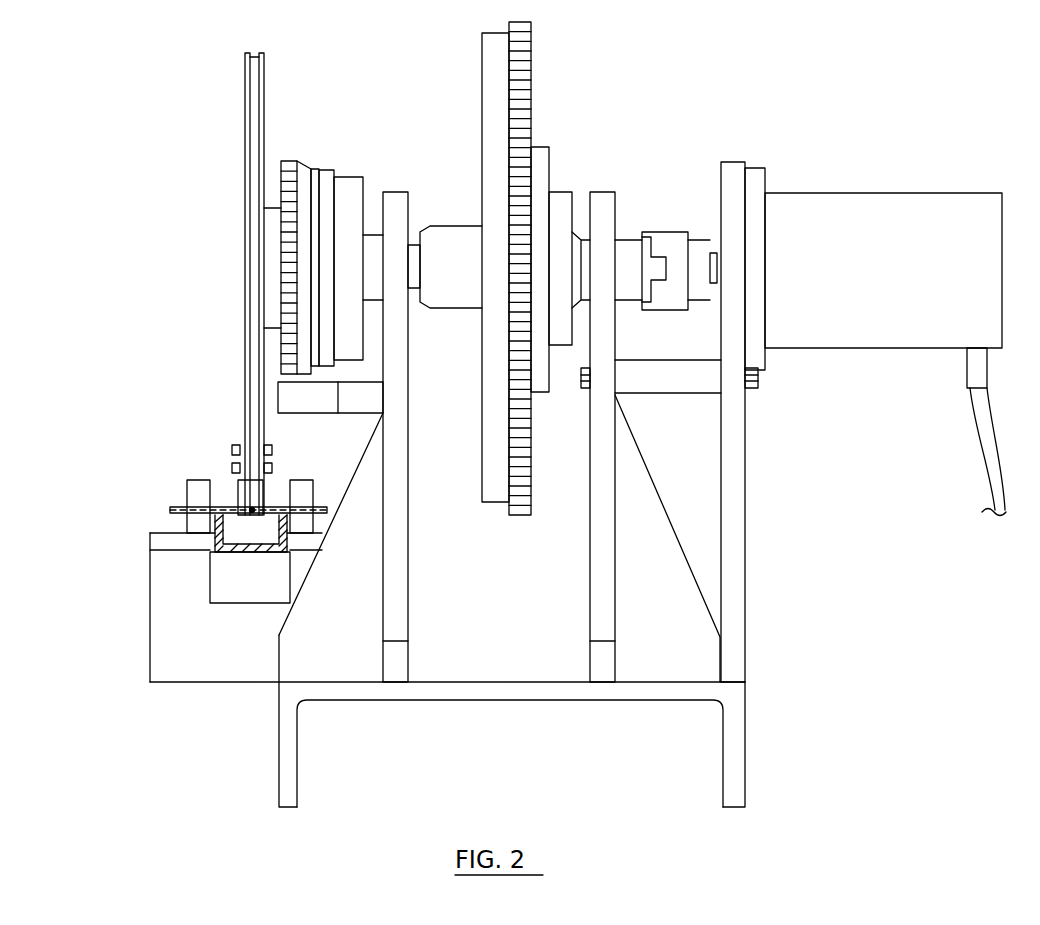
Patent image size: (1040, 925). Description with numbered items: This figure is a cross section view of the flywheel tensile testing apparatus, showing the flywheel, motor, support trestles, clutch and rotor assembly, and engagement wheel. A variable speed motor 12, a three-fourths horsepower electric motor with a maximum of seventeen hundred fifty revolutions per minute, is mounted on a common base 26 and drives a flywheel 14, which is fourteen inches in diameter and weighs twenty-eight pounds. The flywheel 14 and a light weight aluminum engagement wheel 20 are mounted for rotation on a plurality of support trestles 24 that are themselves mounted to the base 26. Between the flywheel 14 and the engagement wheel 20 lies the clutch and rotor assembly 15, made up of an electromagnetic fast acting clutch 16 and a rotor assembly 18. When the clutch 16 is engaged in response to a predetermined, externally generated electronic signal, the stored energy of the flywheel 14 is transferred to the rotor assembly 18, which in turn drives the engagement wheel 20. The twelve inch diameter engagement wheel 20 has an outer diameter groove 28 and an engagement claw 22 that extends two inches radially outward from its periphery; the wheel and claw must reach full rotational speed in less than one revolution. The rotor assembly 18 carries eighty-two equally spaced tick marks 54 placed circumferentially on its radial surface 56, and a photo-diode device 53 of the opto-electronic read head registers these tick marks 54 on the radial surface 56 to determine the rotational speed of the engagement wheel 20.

The variable speed motor 12 is at (890, 192).
The flywheel 14 is at (530, 80).
The clutch and rotor assembly 15 is at (363, 222).
The electromagnetic fast acting clutch 16 is at (352, 332).
The rotor assembly 18 is at (289, 193).
The light weight aluminum engagement wheel 20 is at (245, 90).
The engagement claw 22 is at (230, 488).
The support trestles 24 is at (396, 192).
The base 26 is at (667, 690).
The outer diameter groove 28 is at (257, 53).
The photo-diode device 53 is at (313, 400).
The tick marks 54 is at (288, 263).
The radial surface 56 is at (291, 161).